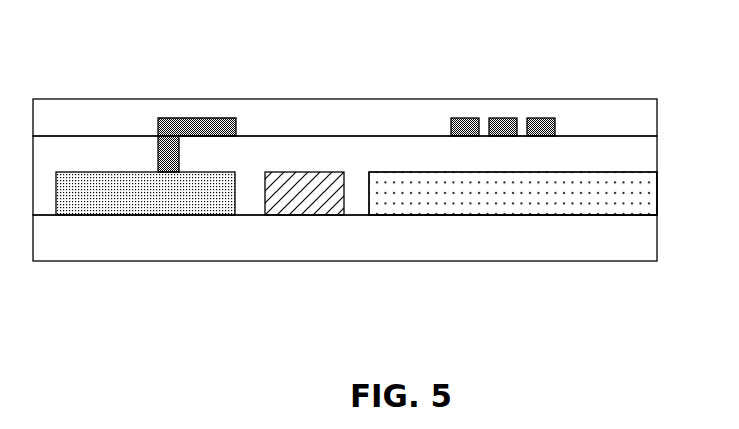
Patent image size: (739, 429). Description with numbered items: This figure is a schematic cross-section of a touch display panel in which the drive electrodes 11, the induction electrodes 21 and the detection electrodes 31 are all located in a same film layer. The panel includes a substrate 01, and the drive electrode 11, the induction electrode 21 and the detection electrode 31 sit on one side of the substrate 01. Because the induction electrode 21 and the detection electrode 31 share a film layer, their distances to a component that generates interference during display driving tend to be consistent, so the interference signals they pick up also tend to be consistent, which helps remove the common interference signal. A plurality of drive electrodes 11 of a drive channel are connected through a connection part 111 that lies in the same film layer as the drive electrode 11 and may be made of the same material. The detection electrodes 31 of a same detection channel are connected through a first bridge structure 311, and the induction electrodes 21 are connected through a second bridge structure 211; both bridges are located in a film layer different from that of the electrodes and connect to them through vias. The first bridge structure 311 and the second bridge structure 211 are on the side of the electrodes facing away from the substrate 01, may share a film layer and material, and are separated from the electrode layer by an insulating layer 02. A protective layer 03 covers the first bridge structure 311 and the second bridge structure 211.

The substrate 01 is at (657, 235).
The insulating layer 02 is at (646, 160).
The protective layer 03 is at (645, 128).
The drive electrode 11 is at (412, 192).
The connection part 111 is at (507, 192).
The induction electrode 21 is at (138, 191).
The second bridge structure 211 is at (200, 127).
The detection electrode 31 is at (310, 192).
The first bridge structure 311 is at (502, 121).